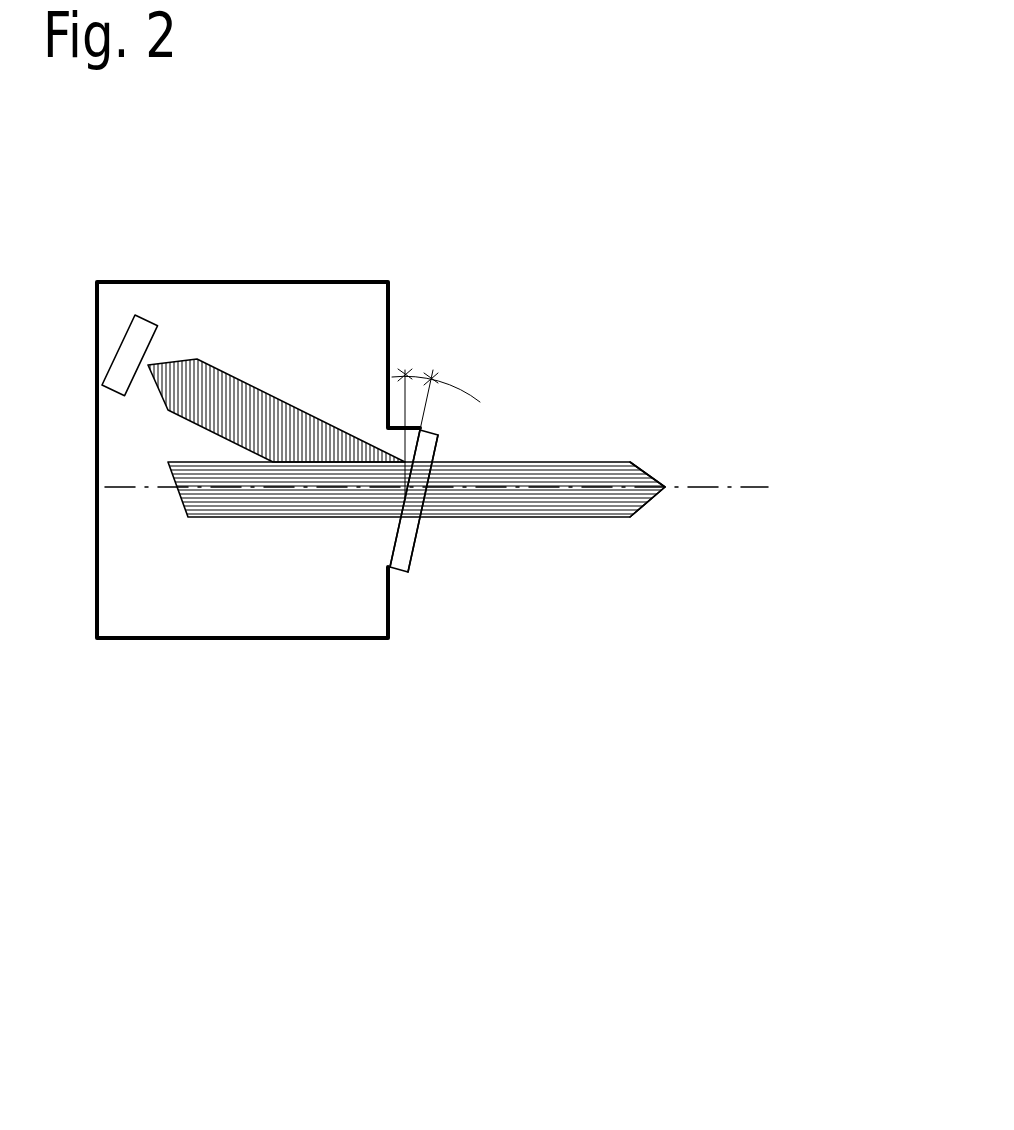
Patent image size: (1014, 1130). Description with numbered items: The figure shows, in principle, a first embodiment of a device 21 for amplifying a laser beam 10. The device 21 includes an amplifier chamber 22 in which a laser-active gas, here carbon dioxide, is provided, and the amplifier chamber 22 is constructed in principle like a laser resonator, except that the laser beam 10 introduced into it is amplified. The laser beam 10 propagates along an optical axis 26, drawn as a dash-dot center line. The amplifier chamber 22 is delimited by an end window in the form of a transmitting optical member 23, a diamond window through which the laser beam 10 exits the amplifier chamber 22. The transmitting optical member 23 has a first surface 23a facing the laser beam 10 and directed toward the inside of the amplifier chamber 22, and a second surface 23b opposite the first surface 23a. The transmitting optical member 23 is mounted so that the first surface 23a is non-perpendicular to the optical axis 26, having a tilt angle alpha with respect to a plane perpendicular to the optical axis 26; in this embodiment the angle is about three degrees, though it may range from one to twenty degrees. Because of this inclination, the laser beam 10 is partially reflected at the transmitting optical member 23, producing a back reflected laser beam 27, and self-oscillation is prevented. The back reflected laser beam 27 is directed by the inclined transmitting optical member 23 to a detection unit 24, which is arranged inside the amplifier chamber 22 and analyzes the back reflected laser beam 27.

The laser beam 10 is at (503, 498).
The device for amplifying the laser beam 21 is at (588, 252).
The amplifier chamber 22 is at (305, 308).
The transmitting optical member 23 is at (412, 570).
The first surface 23a is at (392, 538).
The second surface 23b is at (418, 540).
The detection unit 24 is at (140, 336).
The optical axis 26 is at (673, 488).
The back reflected laser beam 27 is at (260, 417).